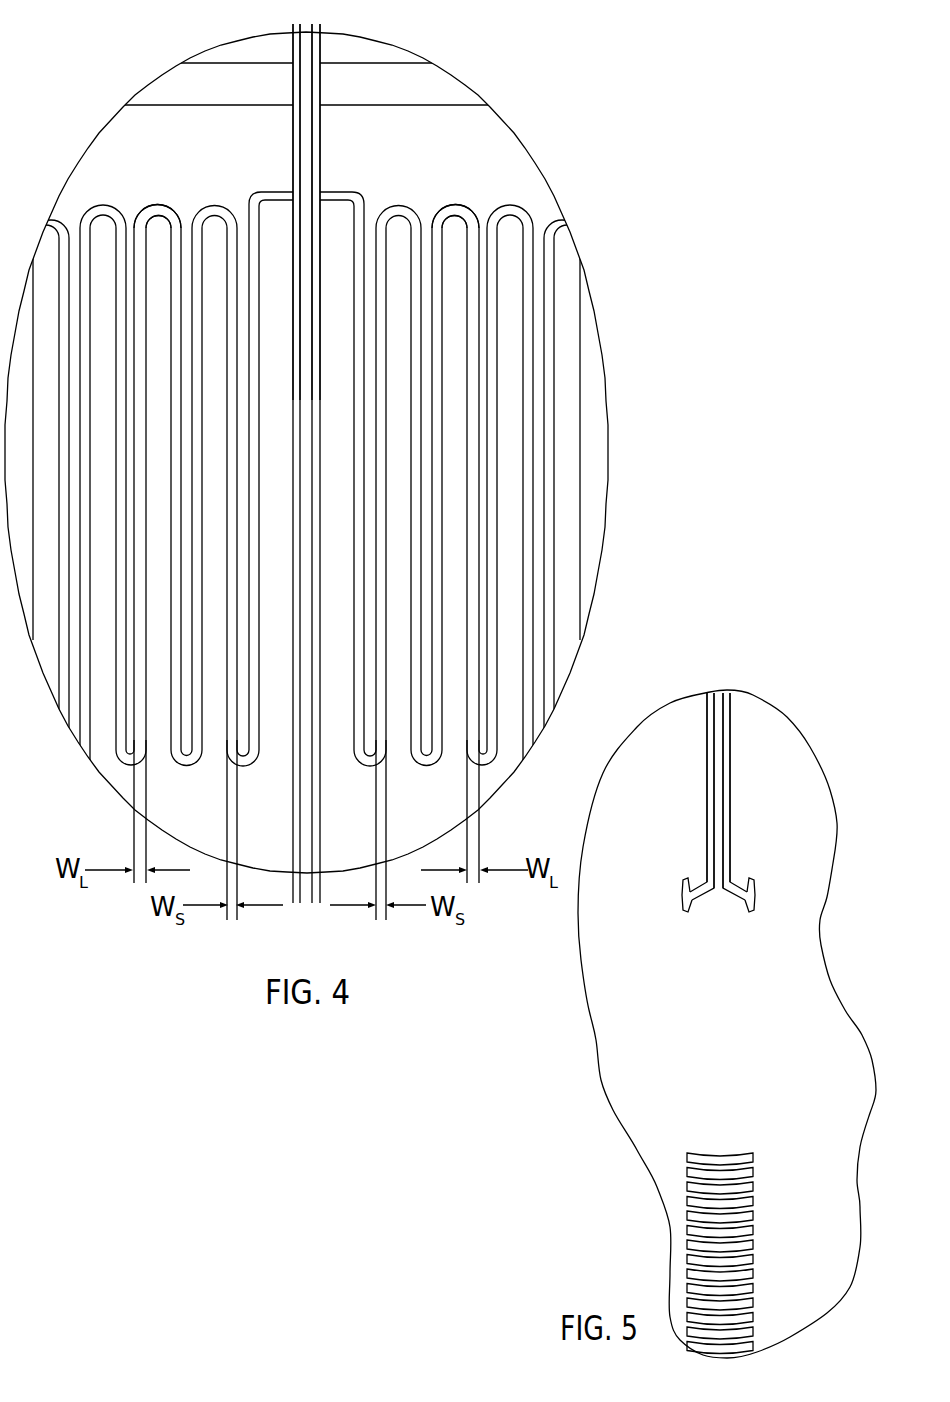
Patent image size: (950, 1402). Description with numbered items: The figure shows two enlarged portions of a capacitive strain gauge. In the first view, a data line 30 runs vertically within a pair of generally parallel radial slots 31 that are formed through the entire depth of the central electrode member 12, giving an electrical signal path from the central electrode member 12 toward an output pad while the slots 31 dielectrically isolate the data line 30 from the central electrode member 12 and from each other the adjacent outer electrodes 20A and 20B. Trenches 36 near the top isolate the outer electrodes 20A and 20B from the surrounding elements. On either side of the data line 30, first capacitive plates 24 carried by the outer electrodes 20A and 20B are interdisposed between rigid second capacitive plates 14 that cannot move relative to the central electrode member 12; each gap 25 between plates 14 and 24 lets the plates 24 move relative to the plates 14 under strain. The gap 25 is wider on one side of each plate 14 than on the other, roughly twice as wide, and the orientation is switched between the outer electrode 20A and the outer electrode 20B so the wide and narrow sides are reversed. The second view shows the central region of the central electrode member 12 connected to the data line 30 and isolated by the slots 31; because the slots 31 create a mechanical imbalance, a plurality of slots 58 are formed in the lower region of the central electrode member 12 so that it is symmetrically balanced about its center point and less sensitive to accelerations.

In FIG. 5, the central electrode member 12 is at (832, 1123).
In FIG. 4, the second capacitive plates 14 is at (99, 737).
In FIG. 4, the outer electrode 20A is at (107, 168).
In FIG. 4, the outer electrode 20B is at (487, 132).
In FIG. 4, the first capacitive plates 24 is at (130, 210).
In FIG. 4, the gap 25 is at (140, 712).
In FIG. 4, the data line 30 is at (306, 908).
In FIG. 5, the data line 30 is at (717, 750).
In FIG. 4, the radial slots 31 is at (292, 122).
In FIG. 5, the radial slots 31 is at (707, 787).
In FIG. 4, the trenches 36 is at (401, 72).
In FIG. 5, the slots 58 is at (708, 1153).